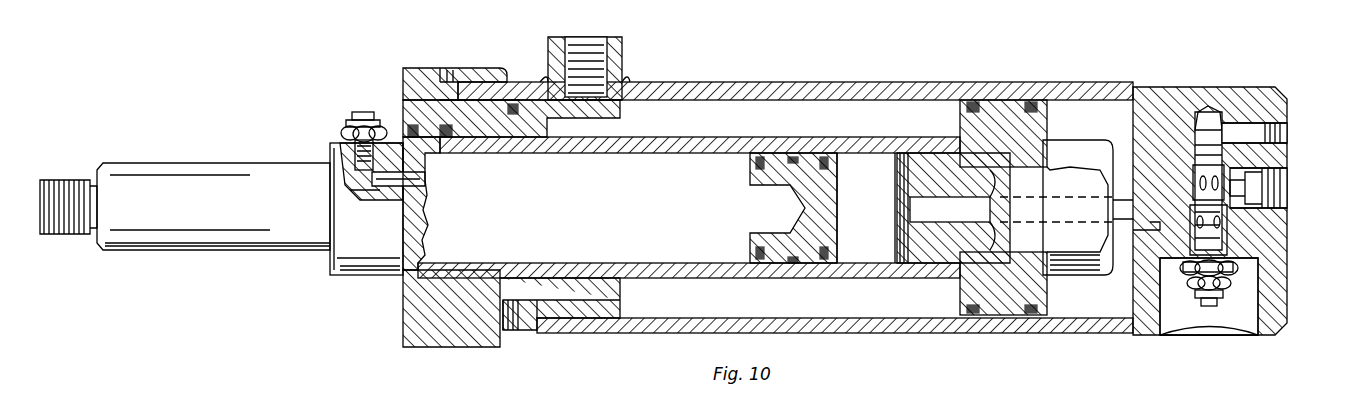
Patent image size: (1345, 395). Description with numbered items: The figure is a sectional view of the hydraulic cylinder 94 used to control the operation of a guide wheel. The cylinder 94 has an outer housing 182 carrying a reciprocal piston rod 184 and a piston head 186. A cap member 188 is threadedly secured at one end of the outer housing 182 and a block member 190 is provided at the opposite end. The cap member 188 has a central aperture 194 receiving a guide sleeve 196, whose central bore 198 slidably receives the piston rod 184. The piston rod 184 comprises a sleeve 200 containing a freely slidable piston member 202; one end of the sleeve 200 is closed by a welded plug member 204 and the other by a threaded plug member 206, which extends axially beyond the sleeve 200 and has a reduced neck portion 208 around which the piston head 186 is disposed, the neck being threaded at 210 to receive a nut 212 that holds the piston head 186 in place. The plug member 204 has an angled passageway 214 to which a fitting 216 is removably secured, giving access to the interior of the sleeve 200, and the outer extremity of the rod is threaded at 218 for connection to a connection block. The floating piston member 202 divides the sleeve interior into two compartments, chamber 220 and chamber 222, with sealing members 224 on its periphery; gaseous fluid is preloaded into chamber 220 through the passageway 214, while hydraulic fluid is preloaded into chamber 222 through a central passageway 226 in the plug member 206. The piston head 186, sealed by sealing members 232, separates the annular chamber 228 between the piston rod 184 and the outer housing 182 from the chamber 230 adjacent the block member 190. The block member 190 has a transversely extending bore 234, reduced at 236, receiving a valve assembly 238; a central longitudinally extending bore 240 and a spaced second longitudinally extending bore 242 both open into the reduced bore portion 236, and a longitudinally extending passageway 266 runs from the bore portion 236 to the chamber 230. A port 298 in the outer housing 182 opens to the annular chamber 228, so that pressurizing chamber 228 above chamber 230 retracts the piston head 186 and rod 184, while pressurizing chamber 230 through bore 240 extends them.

The cylinder 94 is at (865, 82).
The outer housing 182 is at (735, 90).
The piston rod 184 is at (657, 135).
The piston head 186 is at (998, 130).
The cap member 188 is at (442, 56).
The block member 190 is at (1165, 130).
The central aperture 194 is at (405, 110).
The guide sleeve 196 is at (490, 75).
The central bore 198 is at (520, 152).
The sleeve 200 is at (722, 145).
The piston member 202 is at (780, 178).
The plug member 204 is at (365, 282).
The plug member 206 is at (935, 270).
The reduced neck portion 208 is at (1050, 297).
The threads 210 is at (1110, 180).
The nut 212 is at (1058, 145).
The angled passageway 214 is at (445, 172).
The fitting 216 is at (345, 135).
The threaded outer extremity 218 is at (70, 236).
The chamber 220 is at (628, 219).
The chamber 222 is at (878, 219).
The sealing members 224 is at (780, 288).
The central passageway 226 is at (953, 208).
The annular chamber 228 is at (836, 126).
The chamber 230 is at (1080, 110).
The sealing members 232 is at (975, 98).
The transversely extending bore 234 is at (1250, 300).
The reduced bore portion 236 is at (1225, 130).
The valve assembly 238 is at (1240, 268).
The longitudinally extending bore 240 is at (1290, 193).
The second longitudinally extending bore 242 is at (1290, 135).
The longitudinally extending passageway 266 is at (1165, 230).
The port 298 is at (610, 45).